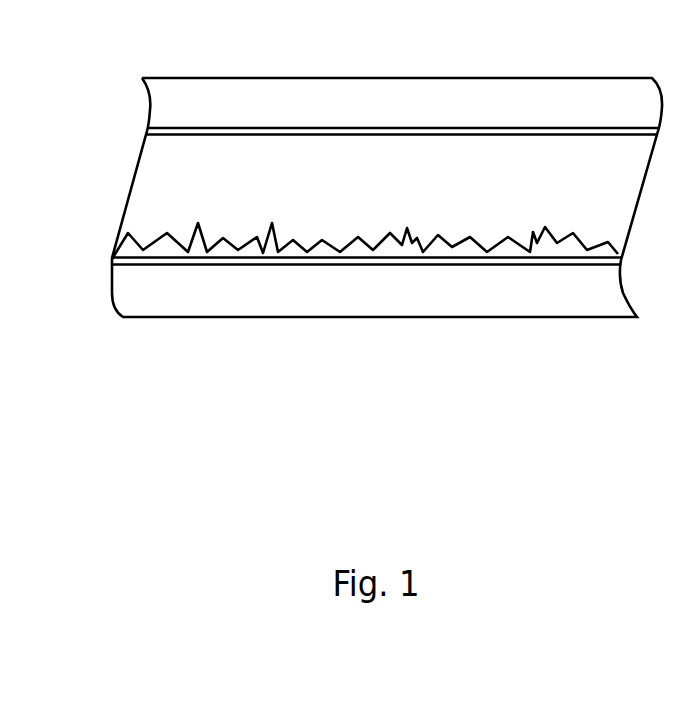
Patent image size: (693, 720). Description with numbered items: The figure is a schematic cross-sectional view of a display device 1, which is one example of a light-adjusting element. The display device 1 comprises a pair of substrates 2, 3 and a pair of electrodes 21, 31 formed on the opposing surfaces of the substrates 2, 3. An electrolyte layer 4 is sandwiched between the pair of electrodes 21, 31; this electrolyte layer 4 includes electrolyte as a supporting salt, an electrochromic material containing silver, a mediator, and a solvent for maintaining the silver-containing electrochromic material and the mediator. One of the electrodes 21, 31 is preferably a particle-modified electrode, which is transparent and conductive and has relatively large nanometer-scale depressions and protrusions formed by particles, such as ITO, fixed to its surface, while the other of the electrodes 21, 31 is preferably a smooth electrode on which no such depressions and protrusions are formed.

The display device 1 is at (378, 77).
The substrate 2 is at (141, 94).
The electrode 21 is at (150, 127).
The electrolyte layer 4 is at (140, 190).
The electrode 31 is at (112, 235).
The substrate 3 is at (122, 293).